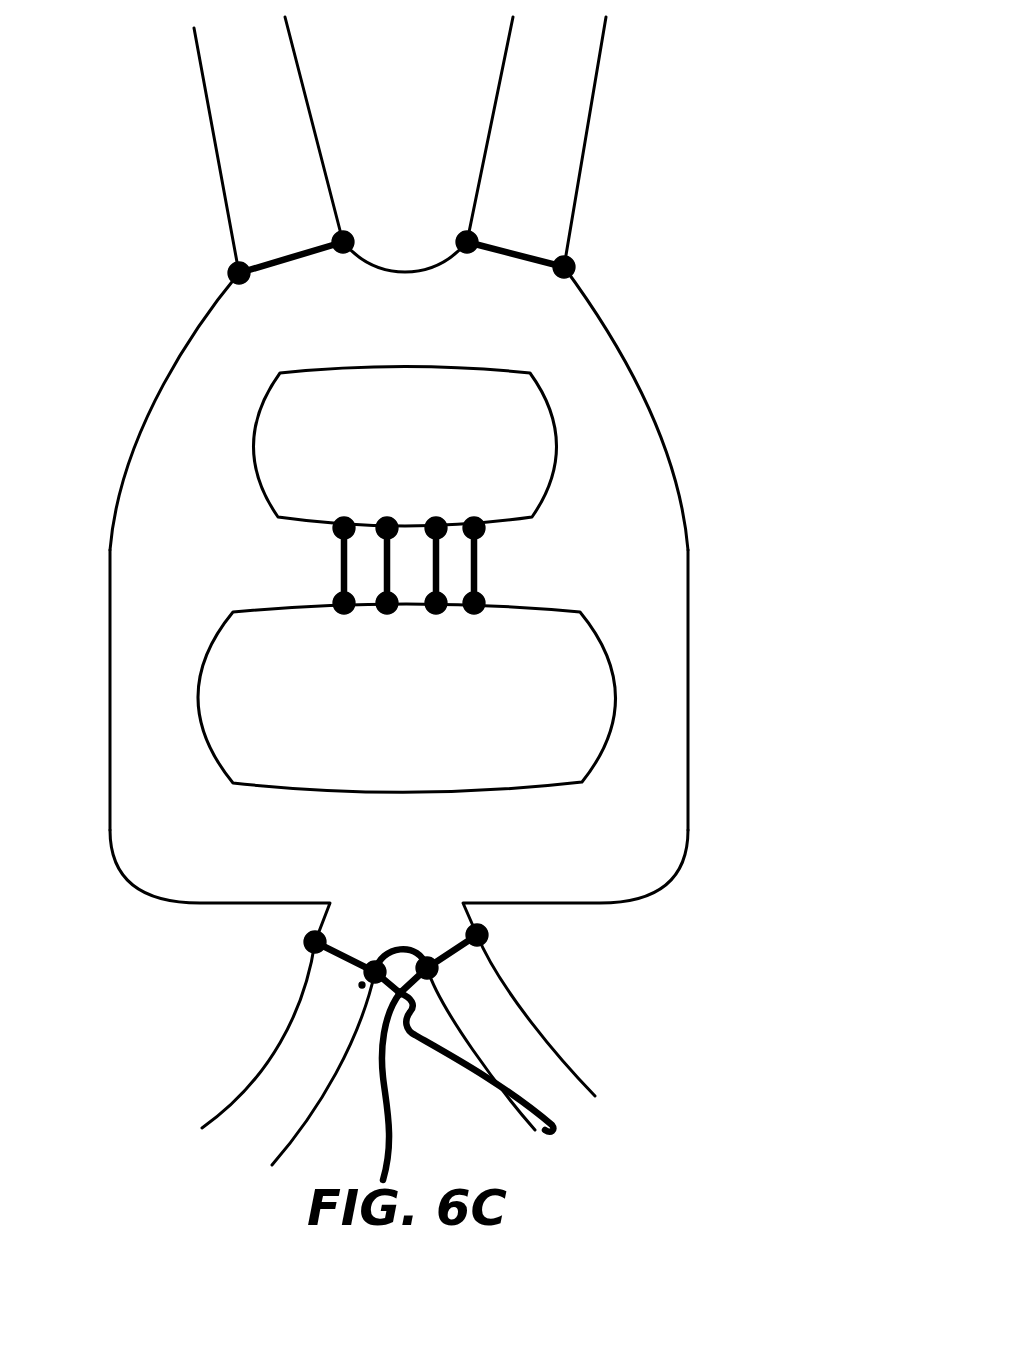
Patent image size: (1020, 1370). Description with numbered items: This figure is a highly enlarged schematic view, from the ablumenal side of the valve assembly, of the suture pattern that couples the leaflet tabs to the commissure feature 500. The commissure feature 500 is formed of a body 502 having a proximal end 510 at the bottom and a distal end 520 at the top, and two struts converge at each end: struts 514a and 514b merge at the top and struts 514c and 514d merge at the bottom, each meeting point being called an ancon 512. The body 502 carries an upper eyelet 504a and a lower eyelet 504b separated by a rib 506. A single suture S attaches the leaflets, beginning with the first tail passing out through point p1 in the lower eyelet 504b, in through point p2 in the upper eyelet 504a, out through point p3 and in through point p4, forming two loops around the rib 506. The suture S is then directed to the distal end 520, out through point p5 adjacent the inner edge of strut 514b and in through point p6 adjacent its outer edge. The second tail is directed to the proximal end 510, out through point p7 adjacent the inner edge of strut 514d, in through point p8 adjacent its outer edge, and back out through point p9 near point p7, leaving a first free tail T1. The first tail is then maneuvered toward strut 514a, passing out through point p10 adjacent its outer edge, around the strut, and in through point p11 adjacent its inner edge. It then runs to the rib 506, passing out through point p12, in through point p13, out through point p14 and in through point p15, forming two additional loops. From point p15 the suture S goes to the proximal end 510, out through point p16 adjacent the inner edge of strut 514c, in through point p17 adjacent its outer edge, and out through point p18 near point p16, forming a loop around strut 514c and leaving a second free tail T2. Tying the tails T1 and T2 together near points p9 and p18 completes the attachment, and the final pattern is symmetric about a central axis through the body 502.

The commissure feature 500 is at (650, 327).
The body 502 is at (667, 798).
The upper eyelet 504a is at (490, 415).
The lower eyelet 504b is at (592, 705).
The rib 506 is at (513, 560).
The proximal end 510 is at (98, 883).
The ancon 512 is at (408, 268).
The strut 514a is at (230, 96).
The strut 514b is at (587, 85).
The strut 514c is at (295, 1068).
The strut 514d is at (540, 1060).
The distal end 520 is at (605, 205).
The suture S is at (336, 572).
The first free tail T1 is at (374, 1086).
The second free tail T2 is at (498, 1065).
The point p1 is at (492, 614).
The point p2 is at (486, 515).
The point p3 is at (439, 621).
The point p4 is at (438, 515).
The point p5 is at (457, 232).
The point p6 is at (587, 255).
The point p7 is at (431, 954).
The point p8 is at (493, 930).
The point p9 is at (428, 985).
The point p10 is at (210, 272).
The point p11 is at (360, 233).
The point p12 is at (385, 515).
The point p13 is at (392, 618).
The point p14 is at (328, 515).
The point p15 is at (323, 618).
The point p16 is at (366, 959).
The point p17 is at (297, 933).
The point p18 is at (340, 994).